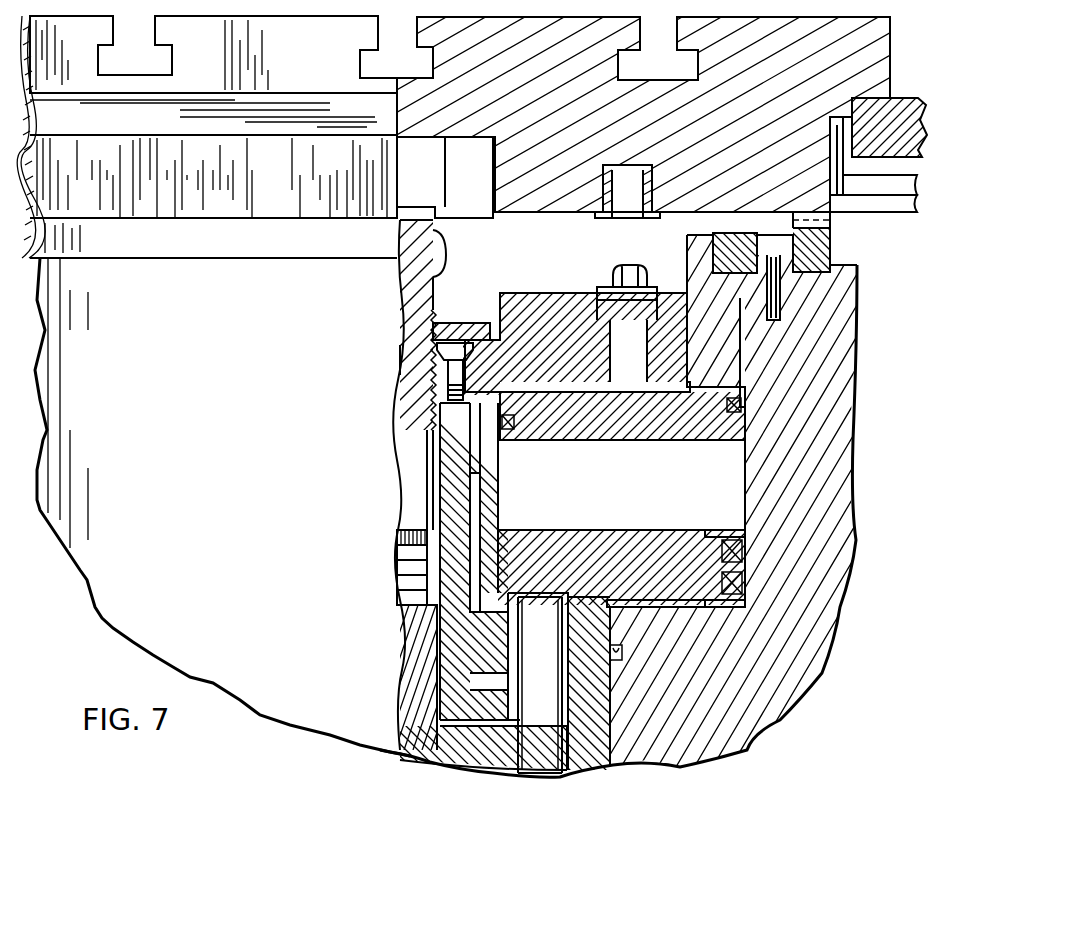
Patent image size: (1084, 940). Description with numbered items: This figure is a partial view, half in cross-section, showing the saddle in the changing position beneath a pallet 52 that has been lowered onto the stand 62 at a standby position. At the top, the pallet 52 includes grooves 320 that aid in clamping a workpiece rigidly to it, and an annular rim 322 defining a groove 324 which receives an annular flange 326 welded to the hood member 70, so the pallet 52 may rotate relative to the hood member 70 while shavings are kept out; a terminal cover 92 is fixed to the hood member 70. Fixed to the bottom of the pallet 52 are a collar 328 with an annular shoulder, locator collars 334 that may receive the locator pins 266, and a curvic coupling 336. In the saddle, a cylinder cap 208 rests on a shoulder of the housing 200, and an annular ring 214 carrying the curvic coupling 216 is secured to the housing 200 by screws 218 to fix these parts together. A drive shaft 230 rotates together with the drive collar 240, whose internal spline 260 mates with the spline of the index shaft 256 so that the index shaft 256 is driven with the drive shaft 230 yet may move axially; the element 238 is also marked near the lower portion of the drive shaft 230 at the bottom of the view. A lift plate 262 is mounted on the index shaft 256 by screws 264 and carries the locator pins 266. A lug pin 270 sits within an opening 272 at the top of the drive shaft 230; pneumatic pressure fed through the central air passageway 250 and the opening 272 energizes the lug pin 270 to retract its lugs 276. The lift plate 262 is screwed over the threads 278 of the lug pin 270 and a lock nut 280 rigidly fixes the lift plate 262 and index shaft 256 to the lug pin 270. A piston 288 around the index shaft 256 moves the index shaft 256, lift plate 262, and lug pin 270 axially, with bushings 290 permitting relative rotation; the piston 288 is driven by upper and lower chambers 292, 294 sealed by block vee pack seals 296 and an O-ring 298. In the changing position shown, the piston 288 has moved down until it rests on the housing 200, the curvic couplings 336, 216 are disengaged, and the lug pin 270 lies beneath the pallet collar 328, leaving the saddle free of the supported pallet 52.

The pallet 52 is at (226, 171).
The stand 62 is at (903, 131).
The hood member 70 is at (843, 183).
The terminal cover 92 is at (837, 198).
The housing 200 is at (261, 404).
The cylinder cap 208 is at (668, 424).
The annular ring 214 is at (258, 244).
The curvic coupling 216 is at (831, 230).
The screws 218 is at (765, 238).
The drive shaft 230 is at (478, 748).
The break line region 238 is at (388, 763).
The drive collar 240 is at (558, 684).
The central air passageway 250 is at (403, 667).
The index shaft 256 is at (453, 557).
The internal spline 260 is at (518, 636).
The lift plate 262 is at (596, 351).
The screws 264 is at (466, 372).
The locator pins 266 is at (643, 311).
The lug pin 270 is at (400, 362).
The opening 272 is at (397, 577).
The retractable lugs 276 is at (436, 266).
The threads 278 is at (425, 385).
The lock nut 280 is at (461, 323).
The piston 288 is at (268, 7).
The bushings 290 is at (464, 374).
The upper chamber 292 is at (628, 498).
The lower chamber 294 is at (673, 608).
The block vee pack seals 296 is at (513, 423).
The O-ring 298 is at (742, 406).
The grooves 320 is at (115, 31).
The annular rim 322 is at (853, 135).
The groove 324 is at (830, 120).
The annular flange 326 is at (830, 157).
The collar 328 is at (484, 179).
The locator collars 334 is at (653, 193).
The curvic coupling 336 is at (831, 219).